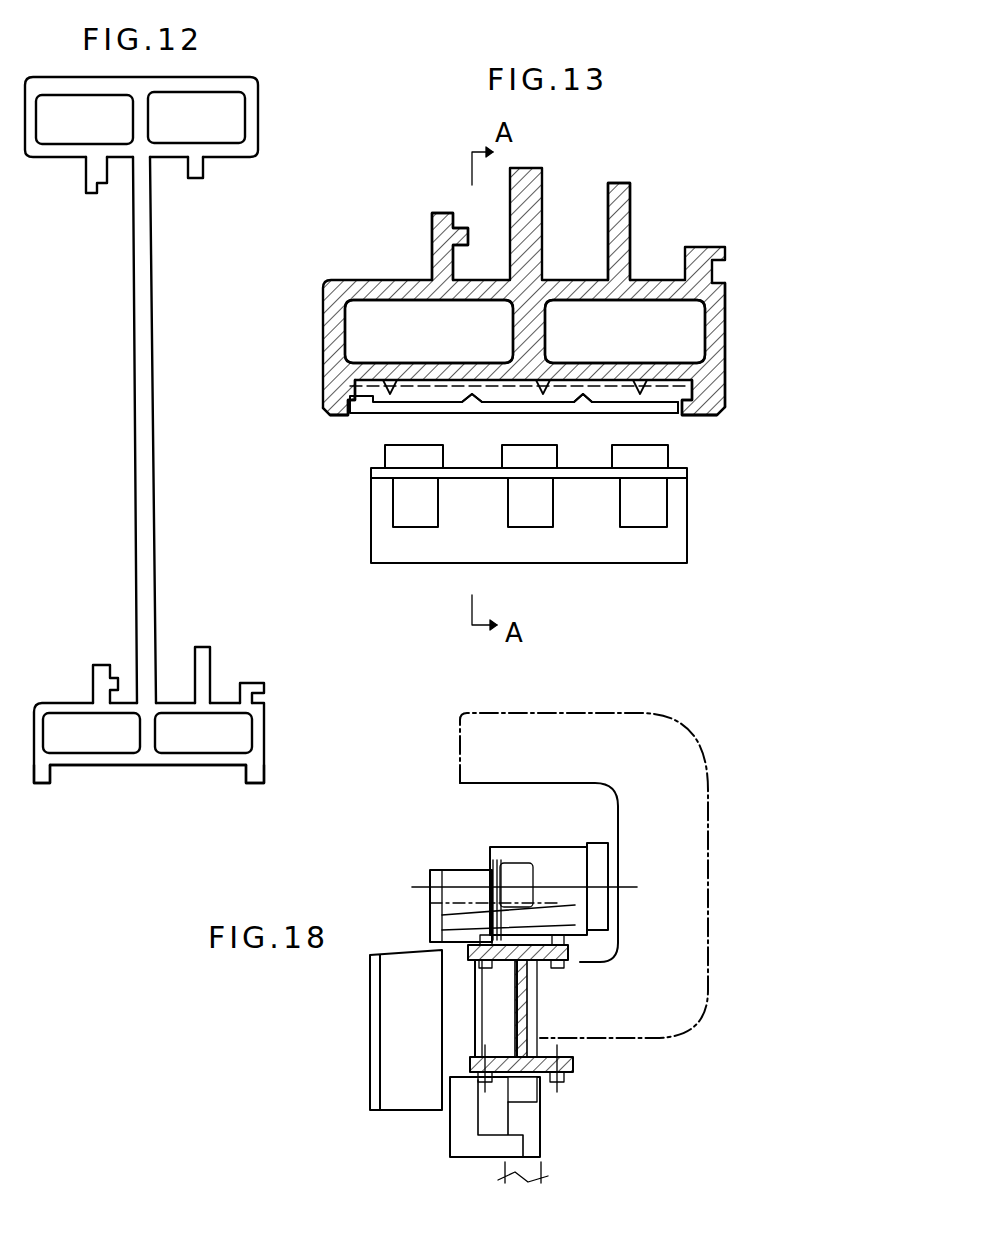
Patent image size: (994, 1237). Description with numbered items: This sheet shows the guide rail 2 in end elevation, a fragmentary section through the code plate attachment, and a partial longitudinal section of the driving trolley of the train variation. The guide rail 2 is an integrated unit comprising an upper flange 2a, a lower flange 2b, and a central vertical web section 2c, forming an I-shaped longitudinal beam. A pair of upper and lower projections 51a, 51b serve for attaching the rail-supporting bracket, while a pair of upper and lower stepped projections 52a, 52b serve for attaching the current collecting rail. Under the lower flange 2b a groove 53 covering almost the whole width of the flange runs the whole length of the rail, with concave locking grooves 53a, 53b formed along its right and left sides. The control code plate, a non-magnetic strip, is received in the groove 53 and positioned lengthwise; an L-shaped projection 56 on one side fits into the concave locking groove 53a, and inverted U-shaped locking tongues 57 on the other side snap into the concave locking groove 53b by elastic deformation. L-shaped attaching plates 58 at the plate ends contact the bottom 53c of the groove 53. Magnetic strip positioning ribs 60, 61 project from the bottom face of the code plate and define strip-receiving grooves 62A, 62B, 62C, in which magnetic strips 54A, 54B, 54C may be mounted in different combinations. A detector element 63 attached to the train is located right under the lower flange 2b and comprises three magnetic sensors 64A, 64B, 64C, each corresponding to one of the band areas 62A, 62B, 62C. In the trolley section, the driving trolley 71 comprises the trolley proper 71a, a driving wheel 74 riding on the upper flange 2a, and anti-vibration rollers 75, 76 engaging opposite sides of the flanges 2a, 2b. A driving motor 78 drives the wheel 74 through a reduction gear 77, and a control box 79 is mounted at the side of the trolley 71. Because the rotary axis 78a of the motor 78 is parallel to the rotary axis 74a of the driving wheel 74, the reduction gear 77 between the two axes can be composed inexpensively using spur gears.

In FIG. 12, the guide rail 2 is at (181, 473).
In FIG. 13, the guide rail 2 is at (529, 295).
In FIG. 18, the guide rail 2 is at (535, 1011).
In FIG. 12, the upper flange 2a is at (250, 108).
In FIG. 18, the upper flange 2a is at (520, 920).
In FIG. 12, the lower flange 2b is at (262, 732).
In FIG. 13, the lower flange 2b is at (720, 338).
In FIG. 18, the lower flange 2b is at (548, 1085).
In FIG. 12, the vertical web section 2c is at (136, 348).
In FIG. 12, the upper projection 51a is at (200, 167).
In FIG. 12, the lower projection 51b is at (205, 660).
In FIG. 13, the lower projection 51b is at (626, 186).
In FIG. 12, the upper stepped projection 52a is at (90, 183).
In FIG. 12, the lower stepped projection 52b is at (95, 678).
In FIG. 13, the lower stepped projection 52b is at (432, 225).
In FIG. 12, the groove 53 is at (150, 766).
In FIG. 12, the concave locking groove 53a is at (50, 770).
In FIG. 13, the concave locking groove 53a is at (335, 398).
In FIG. 12, the concave locking groove 53b is at (245, 768).
In FIG. 13, the concave locking groove 53b is at (708, 390).
In FIG. 13, the bottom of the groove 53c is at (448, 393).
In FIG. 13, the magnetic strip 54A is at (400, 408).
In FIG. 13, the magnetic strip 54B is at (545, 412).
In FIG. 13, the magnetic strip 54C is at (655, 406).
In FIG. 13, the L-shaped projection 56 is at (345, 416).
In FIG. 13, the locking tongue 57 is at (712, 416).
In FIG. 13, the attaching plate 58 is at (590, 393).
In FIG. 13, the magnetic strip positioning rib 60 is at (472, 408).
In FIG. 13, the magnetic strip positioning rib 61 is at (583, 412).
In FIG. 13, the strip-receiving groove 62A is at (388, 390).
In FIG. 13, the strip-receiving groove 62B is at (545, 390).
In FIG. 13, the strip-receiving groove 62C is at (642, 390).
In FIG. 13, the detector element 63 is at (378, 566).
In FIG. 13, the magnetic sensor 64A is at (415, 515).
In FIG. 13, the magnetic sensor 64B is at (530, 515).
In FIG. 13, the magnetic sensor 64C is at (650, 505).
In FIG. 18, the driving trolley 71 is at (536, 983).
In FIG. 18, the trolley proper 71a is at (465, 1038).
In FIG. 18, the driving wheel 74 is at (520, 870).
In FIG. 18, the rotary axis of the driving wheel 74a is at (555, 895).
In FIG. 18, the anti-vibration roller 75 is at (580, 962).
In FIG. 18, the anti-vibration roller 76 is at (452, 1088).
In FIG. 18, the reduction gear 77 is at (465, 876).
In FIG. 18, the driving motor 78 is at (562, 855).
In FIG. 18, the rotary axis of the motor 78a is at (585, 882).
In FIG. 18, the control box 79 is at (392, 1065).